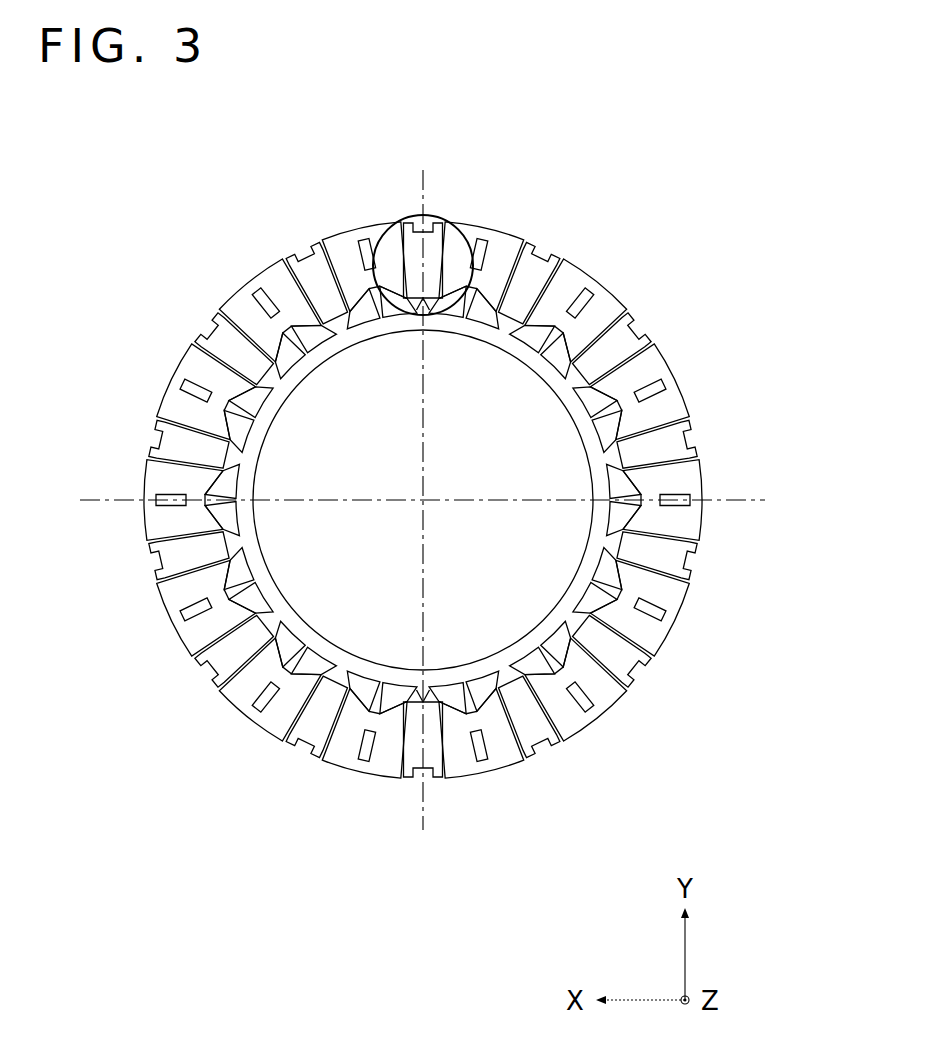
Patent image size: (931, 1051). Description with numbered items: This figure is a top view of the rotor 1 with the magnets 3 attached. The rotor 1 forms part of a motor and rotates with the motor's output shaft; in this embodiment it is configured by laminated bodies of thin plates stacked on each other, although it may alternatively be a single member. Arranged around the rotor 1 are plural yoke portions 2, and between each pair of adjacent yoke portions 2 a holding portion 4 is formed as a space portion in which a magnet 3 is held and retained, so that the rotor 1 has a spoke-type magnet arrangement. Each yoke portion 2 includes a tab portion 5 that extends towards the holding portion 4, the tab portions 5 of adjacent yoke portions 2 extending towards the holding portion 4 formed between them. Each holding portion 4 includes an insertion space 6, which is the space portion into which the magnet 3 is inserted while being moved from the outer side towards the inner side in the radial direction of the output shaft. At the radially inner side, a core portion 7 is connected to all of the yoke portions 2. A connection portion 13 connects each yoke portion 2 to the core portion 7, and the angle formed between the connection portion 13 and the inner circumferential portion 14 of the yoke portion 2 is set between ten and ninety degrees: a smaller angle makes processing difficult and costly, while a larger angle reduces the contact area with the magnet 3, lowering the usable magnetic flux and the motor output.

The rotor 1 is at (483, 800).
The yoke portion 2 is at (470, 248).
The magnet 3 is at (598, 352).
The holding portion 4 is at (210, 330).
The tab portion 5 is at (320, 750).
The insertion space 6 is at (303, 247).
The core portion 7 is at (220, 677).
The connection portion 13 is at (597, 690).
The inner circumferential portion 14 is at (523, 722).